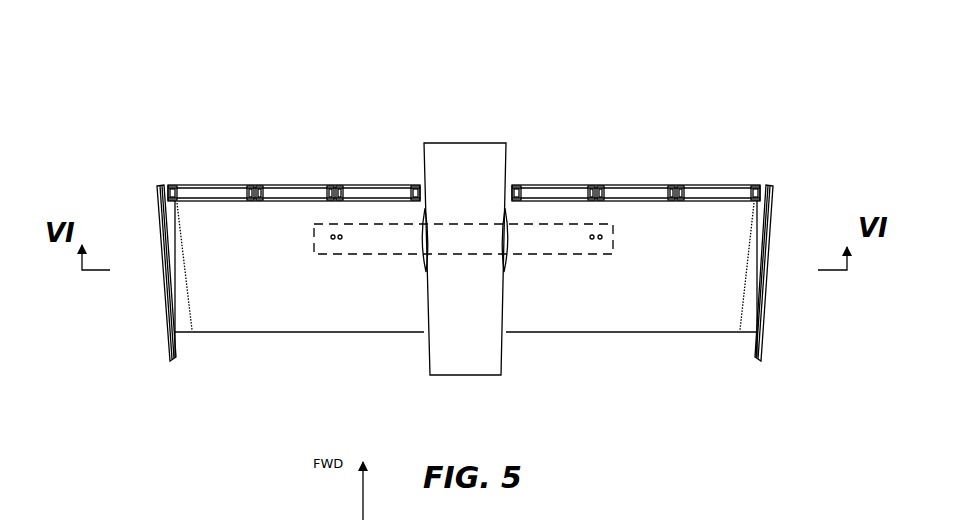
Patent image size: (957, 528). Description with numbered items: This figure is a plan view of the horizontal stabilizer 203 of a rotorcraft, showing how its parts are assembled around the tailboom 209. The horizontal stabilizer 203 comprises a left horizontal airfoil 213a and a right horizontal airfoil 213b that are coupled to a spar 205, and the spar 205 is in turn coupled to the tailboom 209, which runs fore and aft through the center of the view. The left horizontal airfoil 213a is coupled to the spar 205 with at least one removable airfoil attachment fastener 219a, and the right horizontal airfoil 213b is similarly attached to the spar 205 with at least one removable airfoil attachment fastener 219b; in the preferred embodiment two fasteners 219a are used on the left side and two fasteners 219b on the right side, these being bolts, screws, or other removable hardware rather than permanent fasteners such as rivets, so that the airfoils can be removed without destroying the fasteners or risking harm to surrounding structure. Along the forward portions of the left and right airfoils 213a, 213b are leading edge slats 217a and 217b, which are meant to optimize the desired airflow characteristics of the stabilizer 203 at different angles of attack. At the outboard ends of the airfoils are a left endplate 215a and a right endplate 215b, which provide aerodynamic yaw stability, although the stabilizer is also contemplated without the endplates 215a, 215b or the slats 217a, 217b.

The horizontal stabilizer 203 is at (262, 114).
The spar 205 is at (350, 256).
The tailboom 209 is at (467, 167).
The left horizontal airfoil 213a is at (262, 305).
The right horizontal airfoil 213b is at (672, 305).
The left endplate 215a is at (172, 347).
The right endplate 215b is at (758, 362).
The leading edge slat 217a is at (220, 185).
The leading edge slat 217b is at (713, 185).
The removable airfoil attachment fastener 219a is at (333, 237).
The removable airfoil attachment fastener 219b is at (592, 237).